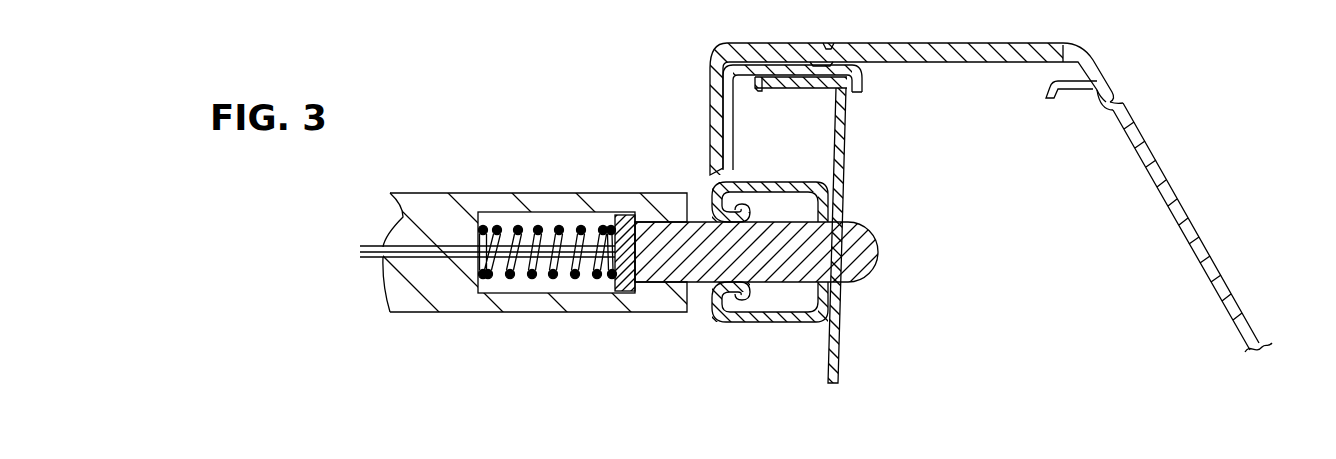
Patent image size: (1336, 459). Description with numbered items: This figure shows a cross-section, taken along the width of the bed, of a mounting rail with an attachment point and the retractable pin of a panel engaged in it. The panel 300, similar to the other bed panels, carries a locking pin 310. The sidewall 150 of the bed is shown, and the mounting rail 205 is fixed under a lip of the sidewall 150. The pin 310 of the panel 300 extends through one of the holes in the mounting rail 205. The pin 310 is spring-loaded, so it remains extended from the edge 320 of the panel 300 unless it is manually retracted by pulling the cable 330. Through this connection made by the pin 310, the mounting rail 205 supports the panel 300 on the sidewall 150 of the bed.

The sidewall 150 is at (826, 360).
The mounting rail 205 is at (776, 183).
The panel 300 is at (664, 256).
The locking pin 310 is at (880, 253).
The edge 320 is at (687, 297).
The cable 330 is at (450, 256).